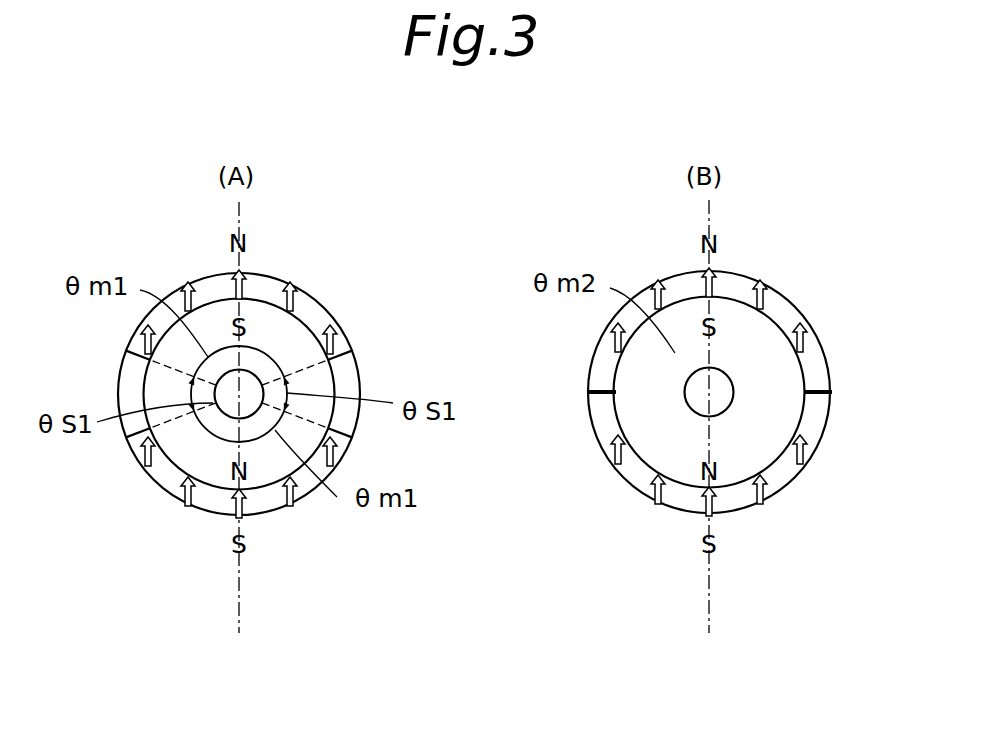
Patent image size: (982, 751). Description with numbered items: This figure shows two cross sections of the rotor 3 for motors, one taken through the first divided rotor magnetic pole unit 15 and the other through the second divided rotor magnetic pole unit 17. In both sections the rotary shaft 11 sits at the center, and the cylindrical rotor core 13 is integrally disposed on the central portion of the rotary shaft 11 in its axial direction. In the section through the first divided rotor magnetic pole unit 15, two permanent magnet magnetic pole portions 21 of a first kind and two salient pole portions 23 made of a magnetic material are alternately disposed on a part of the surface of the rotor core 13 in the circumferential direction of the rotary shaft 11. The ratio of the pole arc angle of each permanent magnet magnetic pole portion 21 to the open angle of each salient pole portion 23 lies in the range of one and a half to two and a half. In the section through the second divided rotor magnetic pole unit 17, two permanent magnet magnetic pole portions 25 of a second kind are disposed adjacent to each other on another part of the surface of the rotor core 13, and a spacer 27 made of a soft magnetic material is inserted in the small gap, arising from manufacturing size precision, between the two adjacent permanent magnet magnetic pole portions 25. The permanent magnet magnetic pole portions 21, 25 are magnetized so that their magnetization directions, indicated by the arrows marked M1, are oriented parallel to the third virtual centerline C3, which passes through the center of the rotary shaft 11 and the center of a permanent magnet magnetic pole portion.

The rotor for motors 3 is at (112, 333).
The rotary shaft 11 is at (303, 338).
The rotor core 13 is at (257, 373).
The first divided rotor magnetic pole unit 15 is at (355, 327).
The second divided rotor magnetic pole unit 17 is at (812, 295).
The permanent magnet magnetic pole portion of a first kind 21 is at (273, 278).
The salient pole portion 23 is at (125, 380).
The permanent magnet magnetic pole portion of a second kind 25 is at (745, 273).
The spacer 27 is at (597, 388).
The magnetization direction M1 is at (178, 298).
The third virtual centerline C3 is at (239, 612).